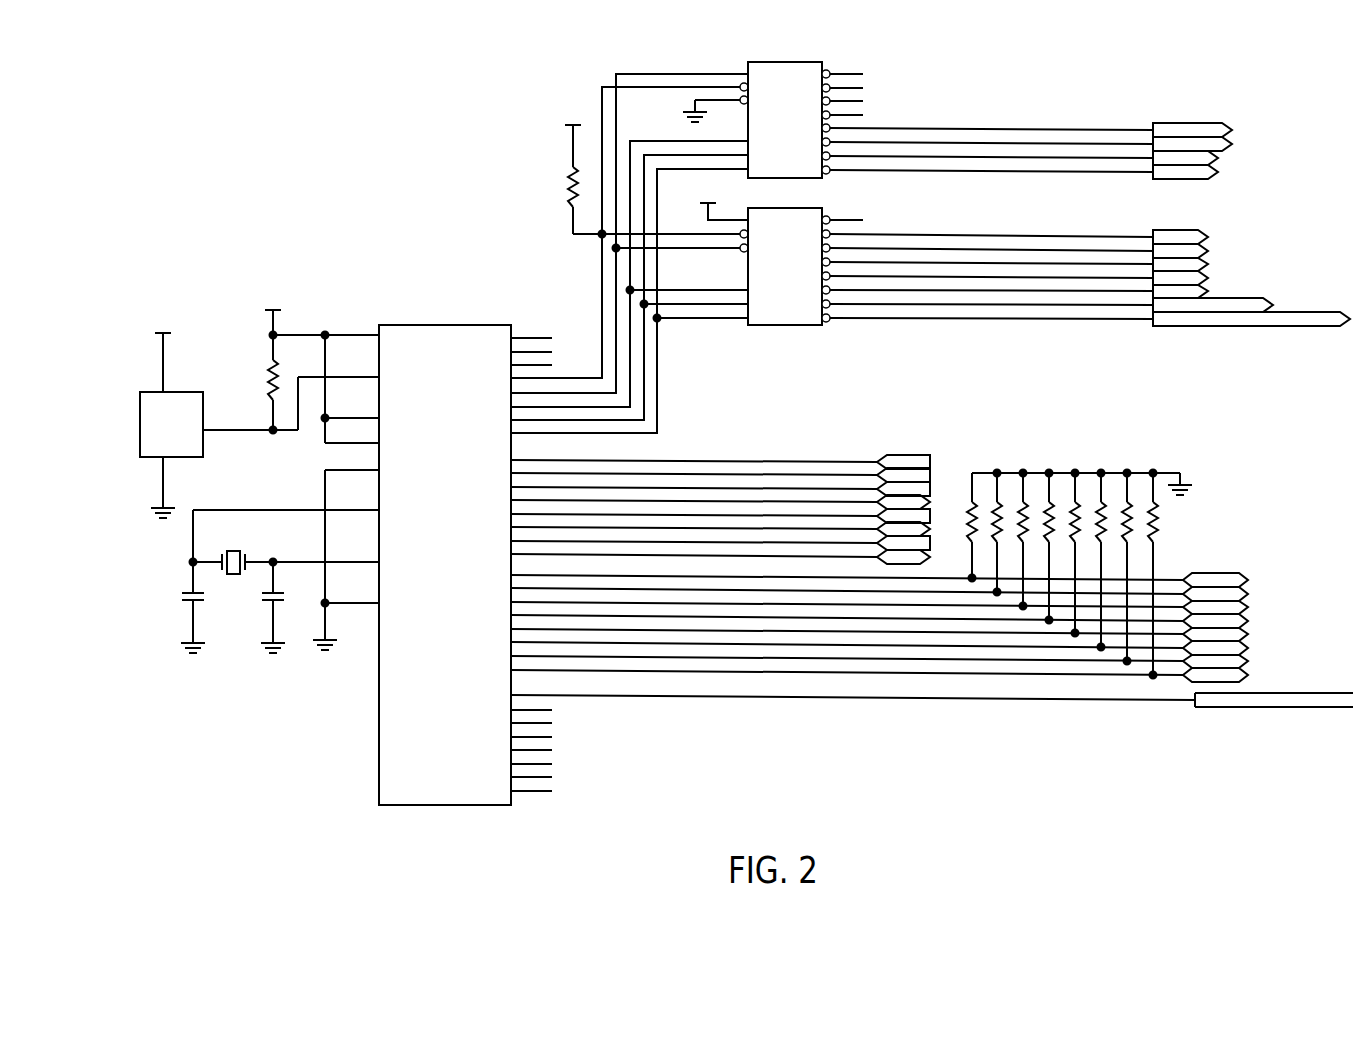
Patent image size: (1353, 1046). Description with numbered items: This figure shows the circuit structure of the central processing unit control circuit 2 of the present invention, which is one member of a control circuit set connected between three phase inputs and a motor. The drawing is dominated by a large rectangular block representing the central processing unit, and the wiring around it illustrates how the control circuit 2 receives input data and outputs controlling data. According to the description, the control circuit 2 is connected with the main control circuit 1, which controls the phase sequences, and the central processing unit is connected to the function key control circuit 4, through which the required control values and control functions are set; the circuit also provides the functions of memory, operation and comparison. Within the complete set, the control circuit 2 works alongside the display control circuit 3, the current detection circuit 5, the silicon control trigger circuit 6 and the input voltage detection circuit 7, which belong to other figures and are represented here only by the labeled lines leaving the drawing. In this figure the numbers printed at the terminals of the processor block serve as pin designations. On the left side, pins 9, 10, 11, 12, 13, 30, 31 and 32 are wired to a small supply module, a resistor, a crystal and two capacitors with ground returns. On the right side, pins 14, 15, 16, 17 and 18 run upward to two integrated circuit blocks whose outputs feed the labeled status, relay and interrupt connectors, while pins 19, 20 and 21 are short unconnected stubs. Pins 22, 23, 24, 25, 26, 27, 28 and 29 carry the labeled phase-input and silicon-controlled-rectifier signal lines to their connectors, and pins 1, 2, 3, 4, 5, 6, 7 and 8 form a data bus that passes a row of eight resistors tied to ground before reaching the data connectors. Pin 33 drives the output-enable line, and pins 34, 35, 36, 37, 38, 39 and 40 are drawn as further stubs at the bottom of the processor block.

The CPU control circuit 2 is at (366, 200).
The main control circuit 1 is at (162, 356).
The display control circuit 3 is at (291, 405).
The function key control circuit 4 is at (847, 625).
The current detection circuit 5 is at (847, 611).
The silicon control trigger circuit 6 is at (847, 598).
The input voltage detection circuit 7 is at (847, 584).
The CPU pin 8 is at (847, 571).
The CPU pin 9 is at (338, 370).
The CPU pin 10 is at (326, 330).
The CPU pin 11 is at (351, 598).
The CPU pin 12 is at (312, 557).
The CPU pin 13 is at (286, 503).
The CPU pin 14 is at (629, 301).
The CPU pin 15 is at (629, 287).
The CPU pin 16 is at (629, 274).
The CPU pin 17 is at (629, 233).
The CPU pin 18 is at (625, 232).
The CPU pin 19 is at (531, 358).
The CPU pin 20 is at (531, 345).
The CPU pin 21 is at (531, 331).
The CPU pin 22 is at (694, 549).
The CPU pin 23 is at (694, 535).
The CPU pin 24 is at (694, 521).
The CPU pin 25 is at (694, 508).
The CPU pin 26 is at (694, 494).
The CPU pin 27 is at (694, 481).
The CPU pin 28 is at (694, 467).
The CPU pin 29 is at (694, 454).
The CPU pin 30 is at (352, 410).
The CPU pin 31 is at (352, 463).
The CPU pin 32 is at (352, 436).
The CPU pin 33 is at (853, 691).
The CPU pin 34 is at (531, 703).
The CPU pin 35 is at (531, 716).
The CPU pin 36 is at (531, 730).
The CPU pin 37 is at (531, 743).
The CPU pin 38 is at (531, 757).
The CPU pin 39 is at (531, 770).
The CPU pin 40 is at (531, 784).